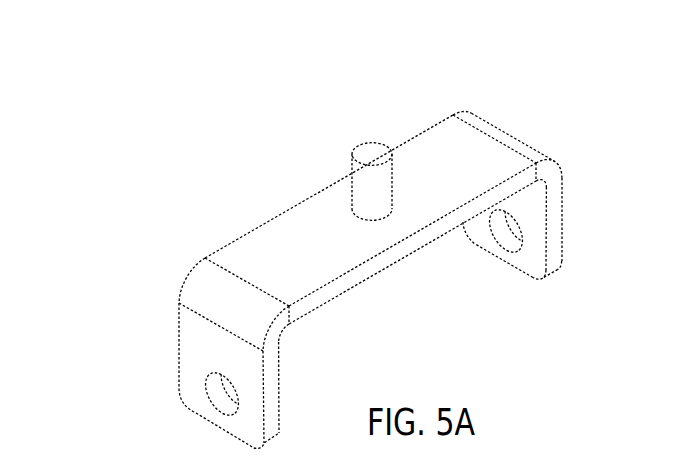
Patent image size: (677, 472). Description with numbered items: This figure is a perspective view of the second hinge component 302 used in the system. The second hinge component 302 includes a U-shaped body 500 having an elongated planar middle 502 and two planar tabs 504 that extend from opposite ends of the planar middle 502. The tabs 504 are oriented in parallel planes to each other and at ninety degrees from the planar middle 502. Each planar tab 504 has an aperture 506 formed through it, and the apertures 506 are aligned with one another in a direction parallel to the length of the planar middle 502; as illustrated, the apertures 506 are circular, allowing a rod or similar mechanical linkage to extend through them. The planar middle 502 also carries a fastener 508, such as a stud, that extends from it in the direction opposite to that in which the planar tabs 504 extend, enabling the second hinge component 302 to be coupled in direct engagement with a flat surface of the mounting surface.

The second hinge component 302 is at (312, 107).
The U-shaped body 500 is at (420, 147).
The planar middle 502 is at (350, 275).
The planar tabs 504 is at (213, 343).
The aperture 506 is at (217, 398).
The fastener 508 is at (365, 193).